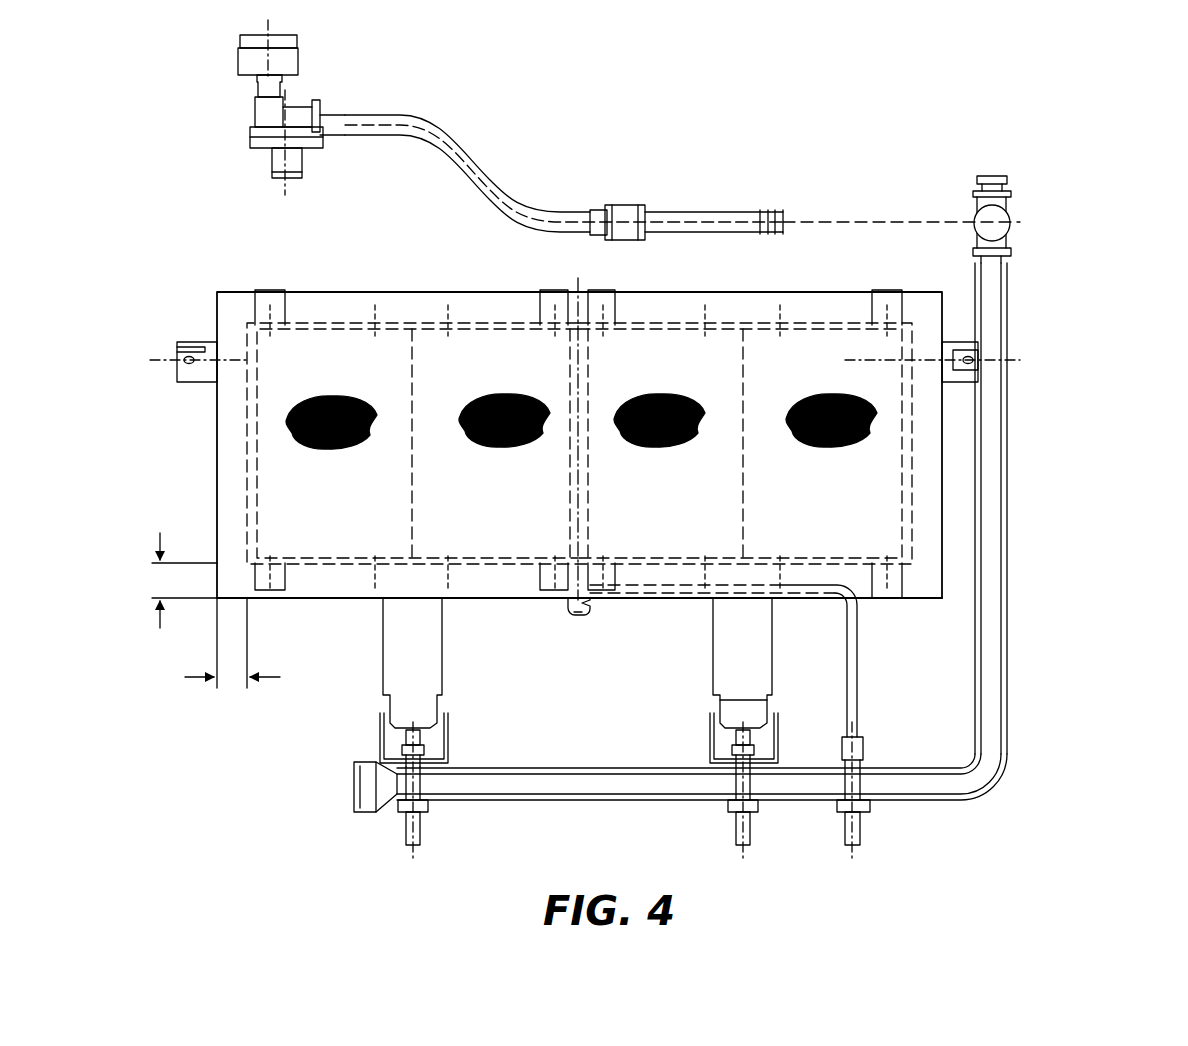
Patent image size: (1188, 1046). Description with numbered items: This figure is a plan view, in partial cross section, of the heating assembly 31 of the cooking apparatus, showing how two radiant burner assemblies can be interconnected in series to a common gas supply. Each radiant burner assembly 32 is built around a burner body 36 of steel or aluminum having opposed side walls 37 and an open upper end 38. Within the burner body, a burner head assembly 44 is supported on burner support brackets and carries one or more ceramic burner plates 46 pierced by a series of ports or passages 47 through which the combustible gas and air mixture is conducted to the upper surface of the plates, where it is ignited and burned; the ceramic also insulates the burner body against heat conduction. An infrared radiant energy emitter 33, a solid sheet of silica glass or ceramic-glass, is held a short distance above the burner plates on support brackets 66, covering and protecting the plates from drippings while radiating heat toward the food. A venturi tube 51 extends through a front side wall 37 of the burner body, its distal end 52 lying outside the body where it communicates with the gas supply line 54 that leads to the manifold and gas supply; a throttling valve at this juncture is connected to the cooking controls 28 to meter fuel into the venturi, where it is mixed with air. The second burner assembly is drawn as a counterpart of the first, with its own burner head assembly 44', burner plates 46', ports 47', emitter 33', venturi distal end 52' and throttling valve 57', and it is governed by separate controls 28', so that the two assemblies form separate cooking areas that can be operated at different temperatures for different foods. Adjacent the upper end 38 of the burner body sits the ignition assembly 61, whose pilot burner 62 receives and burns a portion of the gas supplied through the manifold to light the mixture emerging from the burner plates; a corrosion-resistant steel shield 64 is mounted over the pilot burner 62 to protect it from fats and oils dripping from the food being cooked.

The cooking controls 28 is at (721, 802).
The controls 28' is at (387, 851).
The heating assembly 31 is at (1057, 556).
The radiant burner assembly 32 is at (697, 697).
The infrared radiant energy emitter 33 is at (845, 404).
The cooking compartment 33' is at (314, 404).
The burner body 36 is at (203, 477).
The side walls 37 is at (326, 598).
The open upper end 38 is at (298, 322).
The burner head assembly 44 is at (745, 405).
The liner 44' is at (344, 443).
The burner plates 46 is at (757, 291).
The support flange 46' is at (517, 287).
The ports or passages 47 is at (745, 349).
The heating element 47' is at (418, 350).
The venturi tube 51 is at (442, 627).
The distal end 52 is at (759, 704).
The drain bracket 52' is at (374, 728).
The gas supply line 54 is at (995, 410).
The valve fitting 57' is at (461, 785).
The ignition assembly 61 is at (870, 722).
The pilot burner 62 is at (581, 613).
The shield 64 is at (545, 605).
The support brackets 66 is at (266, 600).